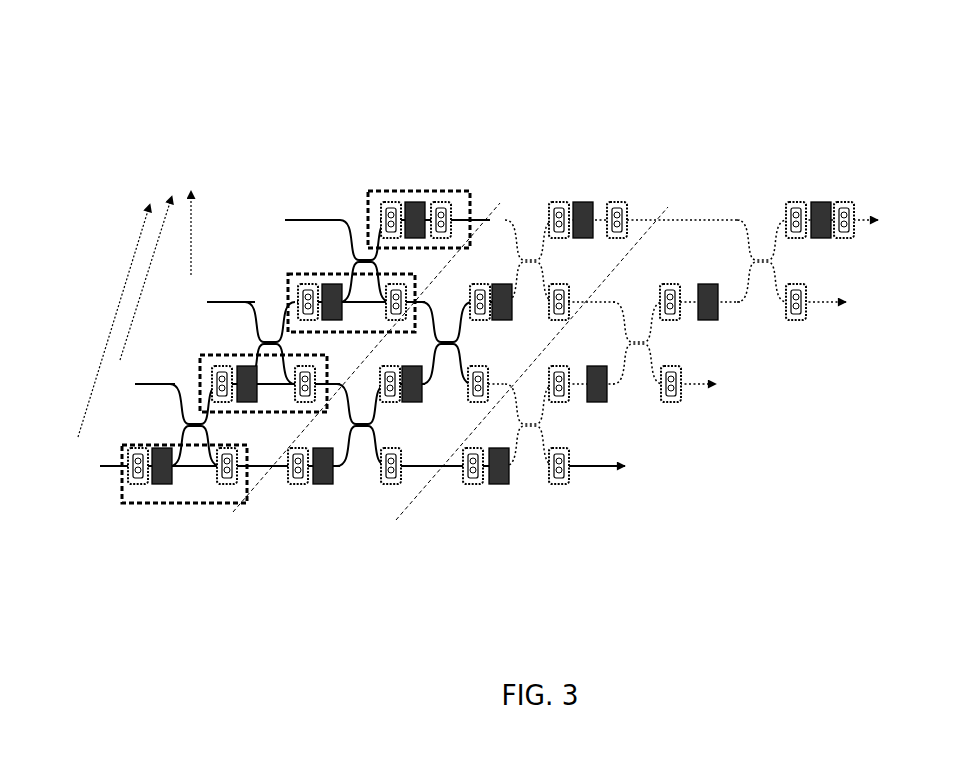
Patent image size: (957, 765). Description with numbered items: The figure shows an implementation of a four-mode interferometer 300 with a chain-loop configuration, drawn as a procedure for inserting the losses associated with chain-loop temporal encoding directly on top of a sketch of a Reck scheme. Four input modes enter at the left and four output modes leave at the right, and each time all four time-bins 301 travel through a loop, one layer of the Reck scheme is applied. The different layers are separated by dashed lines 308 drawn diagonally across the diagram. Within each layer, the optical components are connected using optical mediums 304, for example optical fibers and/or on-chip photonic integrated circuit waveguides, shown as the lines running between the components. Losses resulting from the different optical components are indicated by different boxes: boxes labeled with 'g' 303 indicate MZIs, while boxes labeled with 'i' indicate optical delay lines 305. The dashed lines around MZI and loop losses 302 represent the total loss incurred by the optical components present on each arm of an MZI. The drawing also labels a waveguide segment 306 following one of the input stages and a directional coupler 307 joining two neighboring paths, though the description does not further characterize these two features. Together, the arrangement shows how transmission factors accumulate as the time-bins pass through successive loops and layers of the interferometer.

The 4-mode interferometer 300 is at (117, 41).
The time-bins 301 is at (252, 212).
The dashed lines around MZI and loop losses 302 is at (369, 190).
The boxes labeled with 'g' 303 is at (557, 218).
The optical mediums 304 is at (707, 218).
The optical delay lines 305 is at (822, 197).
The waveguide segment 306 is at (278, 472).
The directional coupler 307 is at (362, 432).
The dashed lines 308 is at (416, 495).